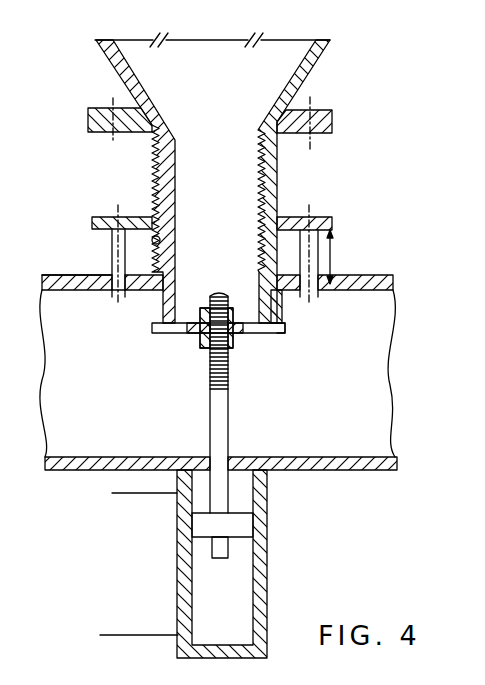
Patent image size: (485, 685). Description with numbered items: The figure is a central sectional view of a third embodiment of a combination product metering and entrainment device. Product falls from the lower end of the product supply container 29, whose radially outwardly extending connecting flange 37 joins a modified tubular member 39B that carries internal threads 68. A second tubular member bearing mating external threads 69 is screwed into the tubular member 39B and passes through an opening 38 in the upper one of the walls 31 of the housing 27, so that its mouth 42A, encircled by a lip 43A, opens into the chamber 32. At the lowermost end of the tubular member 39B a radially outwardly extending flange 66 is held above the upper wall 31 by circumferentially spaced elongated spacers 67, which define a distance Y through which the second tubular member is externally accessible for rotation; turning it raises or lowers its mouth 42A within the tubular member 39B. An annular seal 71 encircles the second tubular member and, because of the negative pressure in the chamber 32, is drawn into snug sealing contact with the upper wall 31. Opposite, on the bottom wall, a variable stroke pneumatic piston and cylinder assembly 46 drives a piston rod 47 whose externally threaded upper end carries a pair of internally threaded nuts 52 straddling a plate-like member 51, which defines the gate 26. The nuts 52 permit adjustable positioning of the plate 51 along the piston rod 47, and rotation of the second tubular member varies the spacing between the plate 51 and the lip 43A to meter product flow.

The product supply container 29 is at (318, 64).
The internal threads 68 is at (263, 129).
The connecting flange 37 is at (334, 116).
The tubular member 39B is at (280, 178).
The housing 27 is at (76, 275).
The walls 31 is at (60, 273).
The spacers 67 is at (112, 243).
The flange 66 is at (334, 220).
The external threads 69 is at (160, 238).
The nuts 52 is at (200, 316).
The distance Y is at (333, 256).
The annular seal 71 is at (137, 294).
The plate-like member 51 is at (157, 326).
The lip 43A is at (173, 334).
The mouth 42A is at (239, 299).
The opening 38 is at (268, 308).
The gate 26 is at (283, 335).
The piston rod 47 is at (223, 421).
The chamber 32 is at (86, 416).
The pneumatic piston and cylinder assembly 46 is at (267, 545).